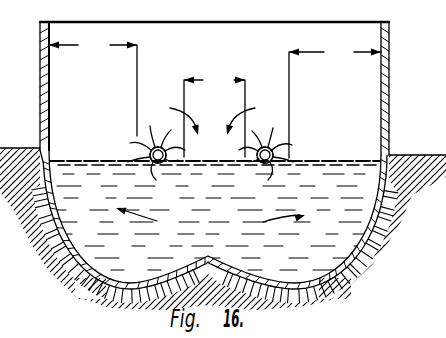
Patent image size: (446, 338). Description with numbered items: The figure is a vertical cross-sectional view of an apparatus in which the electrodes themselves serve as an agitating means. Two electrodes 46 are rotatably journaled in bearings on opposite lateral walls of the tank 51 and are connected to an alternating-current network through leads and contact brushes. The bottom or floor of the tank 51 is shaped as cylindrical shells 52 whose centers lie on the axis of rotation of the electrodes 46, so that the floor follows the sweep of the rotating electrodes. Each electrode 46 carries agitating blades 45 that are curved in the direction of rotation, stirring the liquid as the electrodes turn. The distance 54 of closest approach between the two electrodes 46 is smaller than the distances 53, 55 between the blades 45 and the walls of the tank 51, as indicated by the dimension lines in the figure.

The agitating blades 45 is at (160, 147).
The electrodes 46 is at (273, 152).
The tank 51 is at (387, 132).
The cylindrical shells 52 is at (215, 226).
The distance between blades and tank walls 53 is at (254, 180).
The distance of closest approach of the electrodes 54 is at (214, 113).
The distance between blades and tank walls 55 is at (215, 96).